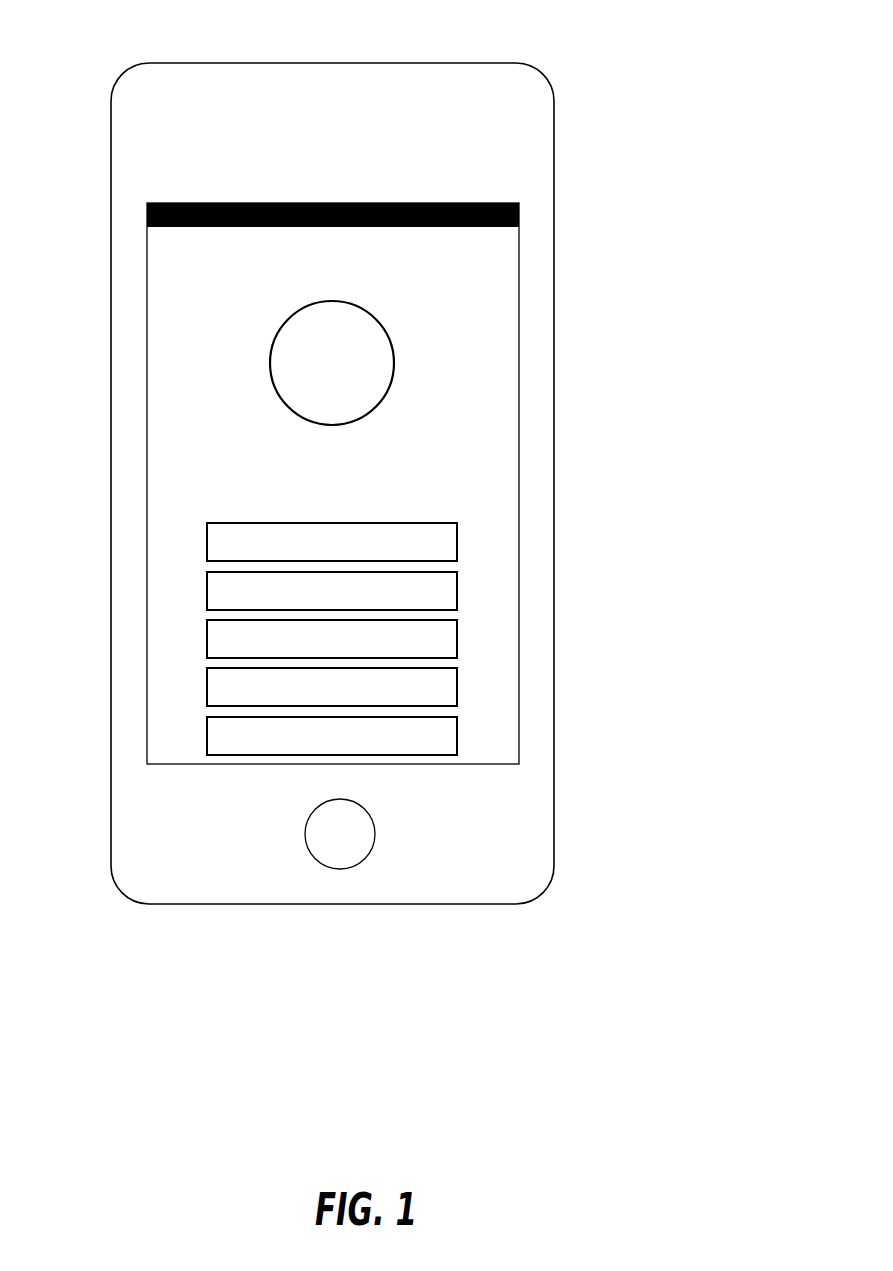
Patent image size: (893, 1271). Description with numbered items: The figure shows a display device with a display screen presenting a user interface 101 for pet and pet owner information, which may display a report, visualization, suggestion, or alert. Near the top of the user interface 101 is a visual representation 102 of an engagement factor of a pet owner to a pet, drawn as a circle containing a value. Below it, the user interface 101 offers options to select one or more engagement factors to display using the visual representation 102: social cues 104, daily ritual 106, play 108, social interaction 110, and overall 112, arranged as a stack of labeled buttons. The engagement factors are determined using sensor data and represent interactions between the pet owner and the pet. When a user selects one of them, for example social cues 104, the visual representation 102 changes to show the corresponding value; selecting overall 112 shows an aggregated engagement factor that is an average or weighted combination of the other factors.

The user interface 101 is at (515, 305).
The visual representation 102 is at (278, 338).
The social cues engagement factor 104 is at (206, 530).
The daily ritual engagement factor 106 is at (206, 578).
The play engagement factor 108 is at (206, 626).
The social interaction engagement factor 110 is at (206, 674).
The overall engagement factor 112 is at (206, 722).